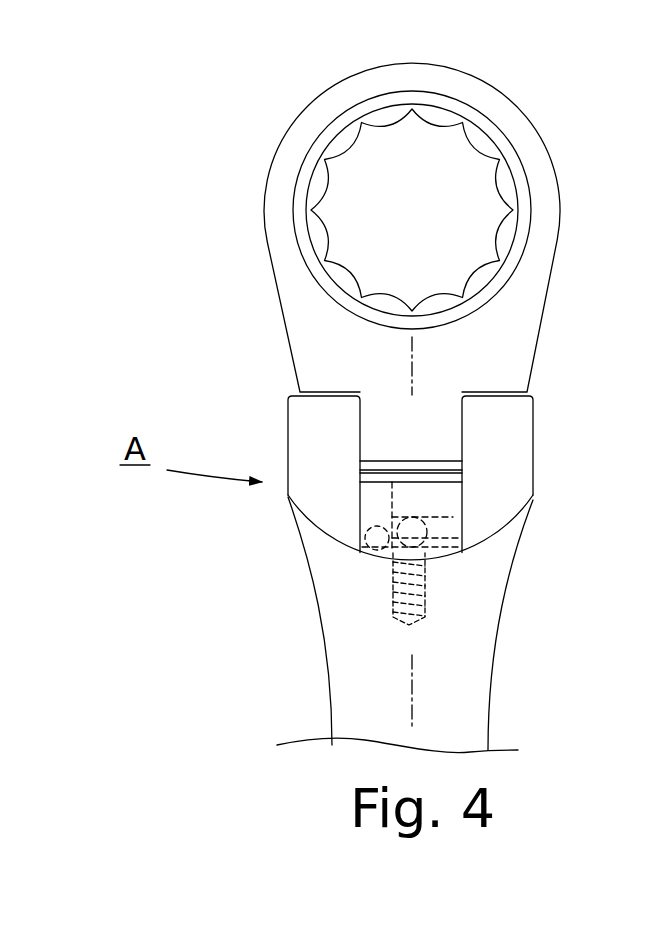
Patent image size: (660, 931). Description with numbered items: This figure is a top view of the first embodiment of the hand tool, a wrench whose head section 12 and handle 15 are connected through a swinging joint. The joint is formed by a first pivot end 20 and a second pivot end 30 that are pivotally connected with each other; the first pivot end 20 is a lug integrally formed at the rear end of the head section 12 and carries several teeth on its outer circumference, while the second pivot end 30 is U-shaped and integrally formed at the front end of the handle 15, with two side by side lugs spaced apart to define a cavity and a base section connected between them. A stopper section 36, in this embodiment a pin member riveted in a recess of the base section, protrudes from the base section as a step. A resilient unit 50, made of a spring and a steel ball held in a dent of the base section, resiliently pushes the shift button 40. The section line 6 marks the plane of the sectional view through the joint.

The head section 12 is at (490, 95).
The handle 15 is at (473, 683).
The first pivot end 20 is at (380, 437).
The second pivot end 30 is at (512, 431).
The stopper section 36 is at (372, 542).
The shift button 40 is at (434, 509).
The resilient unit 50 is at (400, 581).
The section line 6- 6 is at (411, 347).